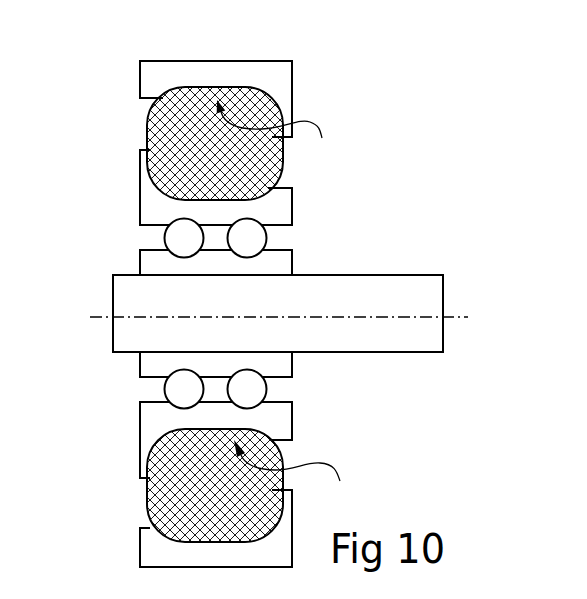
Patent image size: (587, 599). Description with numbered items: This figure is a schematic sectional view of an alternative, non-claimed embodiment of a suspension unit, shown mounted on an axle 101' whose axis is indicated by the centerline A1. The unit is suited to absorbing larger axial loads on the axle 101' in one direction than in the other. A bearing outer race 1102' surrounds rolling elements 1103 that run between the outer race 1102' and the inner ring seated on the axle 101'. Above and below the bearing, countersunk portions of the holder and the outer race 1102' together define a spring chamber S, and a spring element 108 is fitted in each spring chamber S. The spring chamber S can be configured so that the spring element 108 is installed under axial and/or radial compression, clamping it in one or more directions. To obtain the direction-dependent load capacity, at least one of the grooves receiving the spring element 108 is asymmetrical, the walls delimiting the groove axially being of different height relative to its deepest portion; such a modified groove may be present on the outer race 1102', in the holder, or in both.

The outer race 1102' is at (168, 314).
The axle 101' is at (331, 313).
The rotation axis A1 is at (95, 317).
The rolling element 1103 is at (175, 392).
The spring chamber S is at (173, 97).
The spring element 108 is at (177, 485).